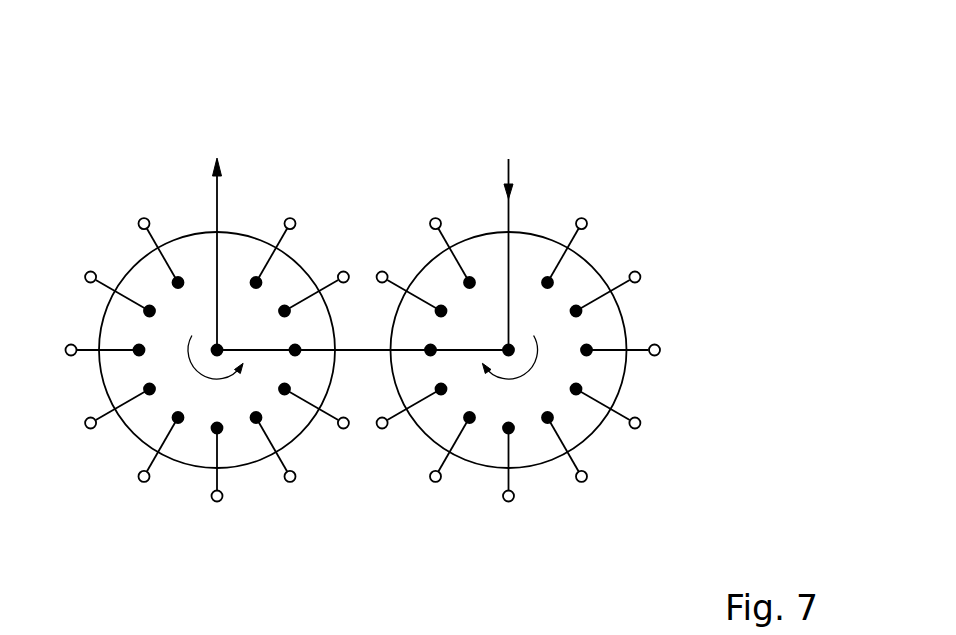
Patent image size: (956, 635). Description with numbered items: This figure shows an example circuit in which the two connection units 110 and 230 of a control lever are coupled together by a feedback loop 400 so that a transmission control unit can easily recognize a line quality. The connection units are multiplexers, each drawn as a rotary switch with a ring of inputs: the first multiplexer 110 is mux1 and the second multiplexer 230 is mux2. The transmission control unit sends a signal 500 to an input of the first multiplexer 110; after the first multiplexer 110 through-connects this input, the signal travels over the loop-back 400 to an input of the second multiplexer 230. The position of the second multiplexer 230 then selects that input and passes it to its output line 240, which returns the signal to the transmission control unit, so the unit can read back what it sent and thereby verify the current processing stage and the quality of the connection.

The first multiplexer 110 is at (564, 189).
The second multiplexer 230 is at (278, 189).
The output line 240 is at (215, 208).
The loop-back 400 is at (363, 352).
The signal 500 is at (509, 173).